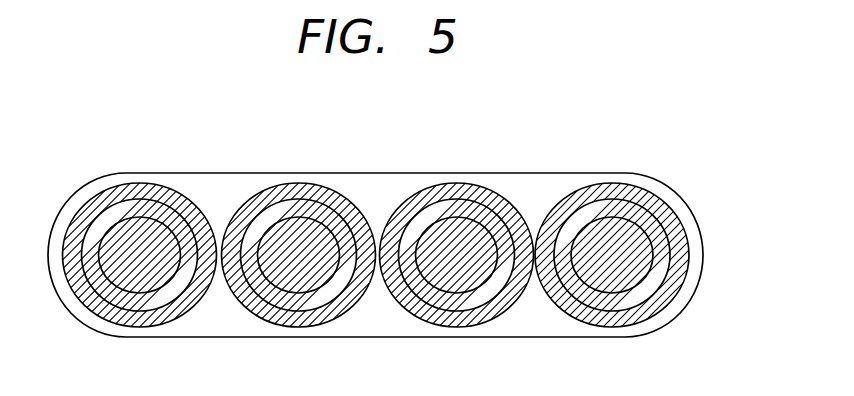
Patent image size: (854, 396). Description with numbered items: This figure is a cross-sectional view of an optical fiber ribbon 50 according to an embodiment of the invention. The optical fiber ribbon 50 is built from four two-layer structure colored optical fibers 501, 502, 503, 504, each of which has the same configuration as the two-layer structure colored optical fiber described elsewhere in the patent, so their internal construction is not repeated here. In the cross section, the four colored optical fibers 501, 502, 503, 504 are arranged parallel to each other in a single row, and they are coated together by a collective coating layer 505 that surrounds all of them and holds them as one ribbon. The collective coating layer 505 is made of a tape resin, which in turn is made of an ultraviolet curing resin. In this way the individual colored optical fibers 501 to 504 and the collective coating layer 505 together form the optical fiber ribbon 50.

The optical fiber ribbon 50 is at (455, 148).
The collective coating layer 505 is at (373, 199).
The two-layer structure colored optical fiber 501 is at (133, 310).
The two-layer structure colored optical fiber 502 is at (292, 309).
The two-layer structure colored optical fiber 503 is at (443, 310).
The two-layer structure colored optical fiber 504 is at (612, 310).